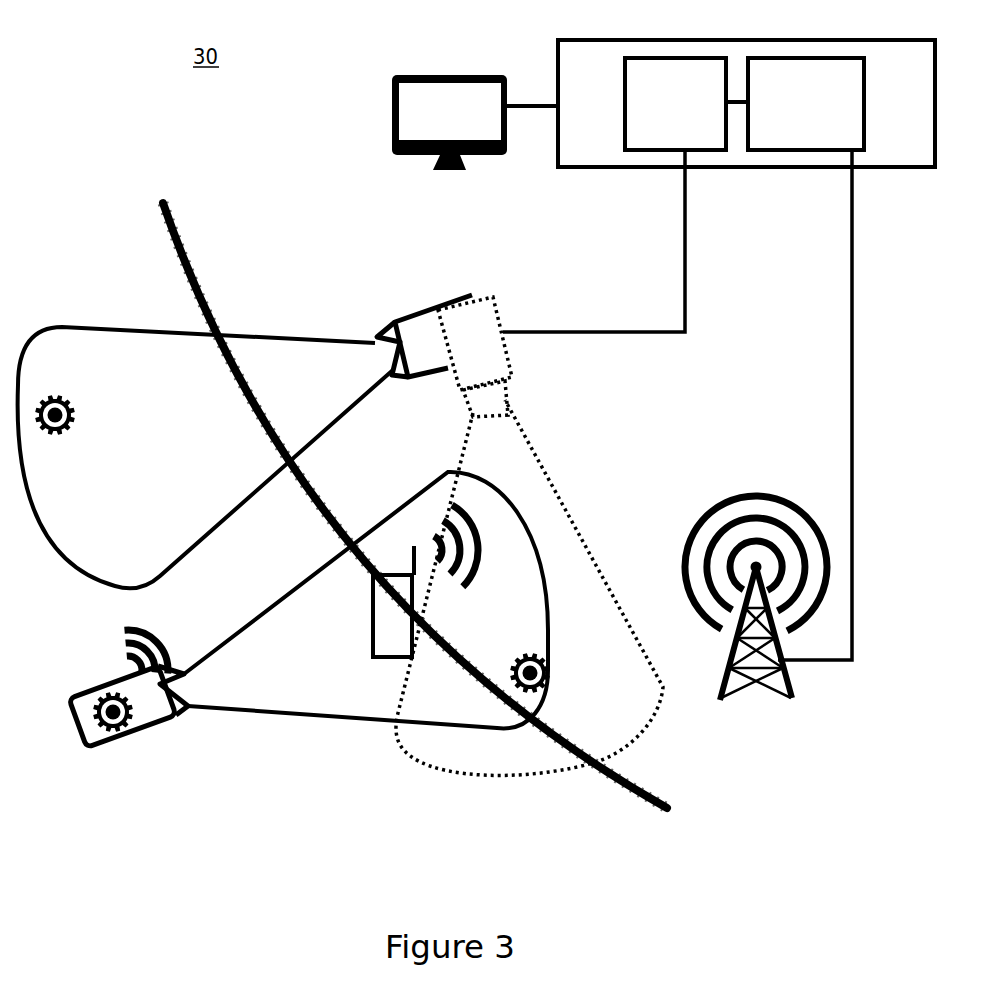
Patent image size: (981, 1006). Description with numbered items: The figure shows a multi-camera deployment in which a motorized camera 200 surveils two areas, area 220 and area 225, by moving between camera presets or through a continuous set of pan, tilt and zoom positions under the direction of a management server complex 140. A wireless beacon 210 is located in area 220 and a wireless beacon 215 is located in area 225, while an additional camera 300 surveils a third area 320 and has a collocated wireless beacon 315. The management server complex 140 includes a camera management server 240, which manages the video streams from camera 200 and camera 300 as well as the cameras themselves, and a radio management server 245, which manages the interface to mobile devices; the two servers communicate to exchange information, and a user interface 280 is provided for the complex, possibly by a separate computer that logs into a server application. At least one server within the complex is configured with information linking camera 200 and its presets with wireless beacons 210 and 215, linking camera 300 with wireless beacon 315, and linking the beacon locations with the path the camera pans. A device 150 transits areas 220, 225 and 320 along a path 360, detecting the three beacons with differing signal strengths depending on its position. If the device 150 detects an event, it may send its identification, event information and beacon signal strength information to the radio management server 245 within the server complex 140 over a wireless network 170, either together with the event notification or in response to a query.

The management server complex 140 is at (660, 170).
The device 150 is at (393, 657).
The wireless network 170 is at (780, 700).
The camera 200 is at (510, 310).
The wireless beacon 210 is at (78, 418).
The wireless beacon 215 is at (543, 660).
The area 220 is at (83, 563).
The area 225 is at (447, 775).
The camera management server 240 is at (628, 64).
The radio management server 245 is at (866, 73).
The user interface 280 is at (393, 78).
The camera 300 is at (78, 717).
The wireless beacon 315 is at (107, 735).
The area 320 is at (430, 473).
The path 360 is at (637, 797).